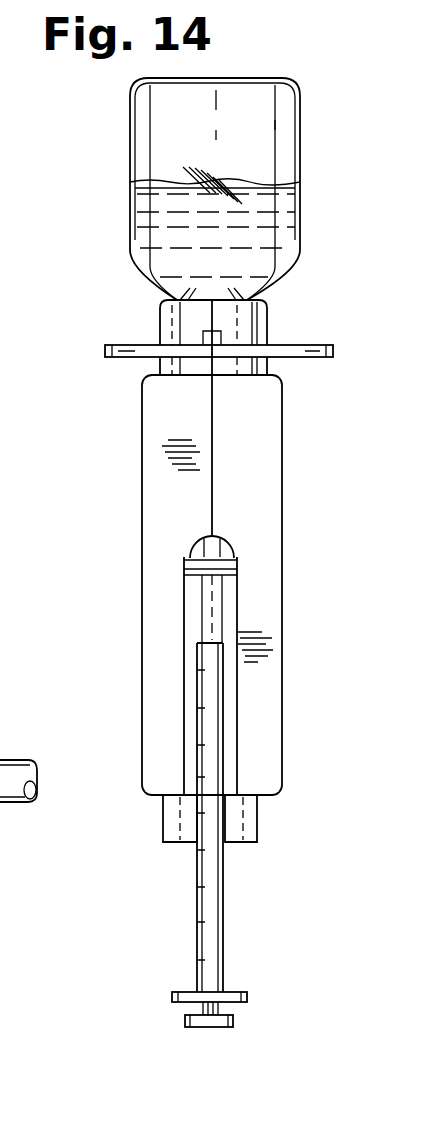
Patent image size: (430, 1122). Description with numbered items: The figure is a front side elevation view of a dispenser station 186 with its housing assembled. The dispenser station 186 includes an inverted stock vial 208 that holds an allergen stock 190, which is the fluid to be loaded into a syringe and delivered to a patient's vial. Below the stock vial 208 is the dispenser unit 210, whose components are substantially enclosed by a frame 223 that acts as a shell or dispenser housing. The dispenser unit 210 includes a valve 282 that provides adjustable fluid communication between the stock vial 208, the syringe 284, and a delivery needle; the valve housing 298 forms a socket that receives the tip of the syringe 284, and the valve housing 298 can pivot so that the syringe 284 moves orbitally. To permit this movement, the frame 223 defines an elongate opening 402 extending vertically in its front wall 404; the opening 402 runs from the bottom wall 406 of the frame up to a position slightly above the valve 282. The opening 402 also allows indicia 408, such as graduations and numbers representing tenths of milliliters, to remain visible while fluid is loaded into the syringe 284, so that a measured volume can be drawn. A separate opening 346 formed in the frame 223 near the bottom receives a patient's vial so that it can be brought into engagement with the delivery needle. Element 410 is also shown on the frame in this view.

The dispenser station 186 is at (52, 441).
The allergen stock 190 is at (145, 232).
The stock vial 208 is at (130, 148).
The dispenser unit 210 is at (78, 489).
The frame 223 is at (106, 548).
The valve 282 is at (197, 556).
The syringe 284 is at (228, 940).
The valve housing 298 is at (222, 558).
The opening 346 is at (244, 812).
The elongate opening 402 is at (234, 690).
The front wall 404 is at (267, 607).
The bottom wall 406 is at (160, 795).
The indicia 408 is at (194, 745).
The right leg 410 is at (238, 838).